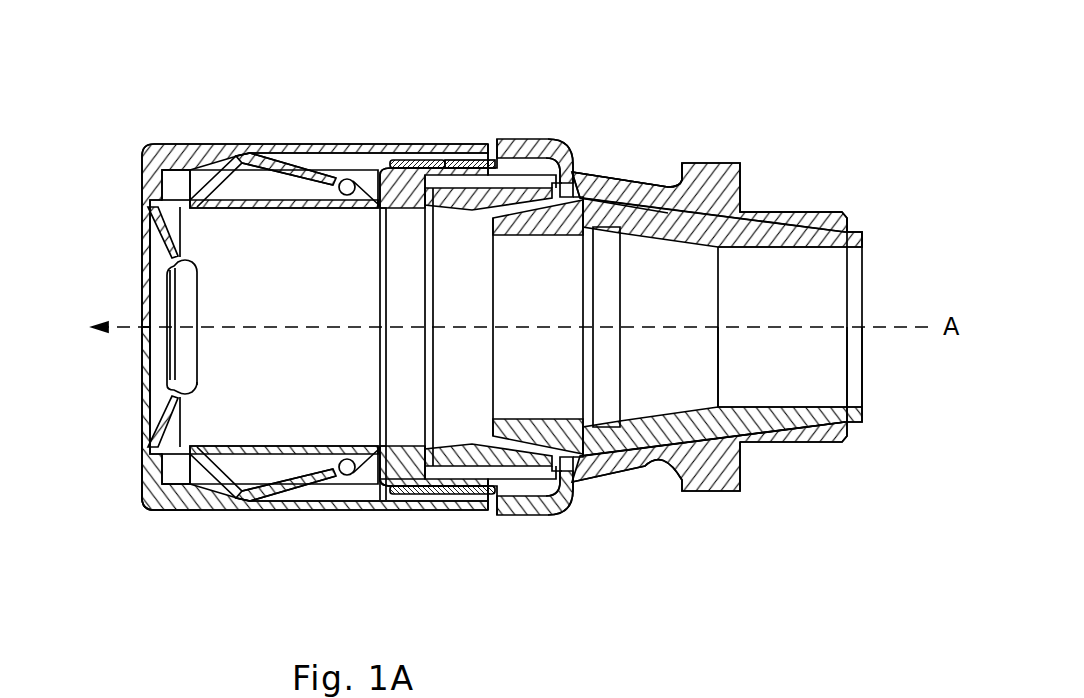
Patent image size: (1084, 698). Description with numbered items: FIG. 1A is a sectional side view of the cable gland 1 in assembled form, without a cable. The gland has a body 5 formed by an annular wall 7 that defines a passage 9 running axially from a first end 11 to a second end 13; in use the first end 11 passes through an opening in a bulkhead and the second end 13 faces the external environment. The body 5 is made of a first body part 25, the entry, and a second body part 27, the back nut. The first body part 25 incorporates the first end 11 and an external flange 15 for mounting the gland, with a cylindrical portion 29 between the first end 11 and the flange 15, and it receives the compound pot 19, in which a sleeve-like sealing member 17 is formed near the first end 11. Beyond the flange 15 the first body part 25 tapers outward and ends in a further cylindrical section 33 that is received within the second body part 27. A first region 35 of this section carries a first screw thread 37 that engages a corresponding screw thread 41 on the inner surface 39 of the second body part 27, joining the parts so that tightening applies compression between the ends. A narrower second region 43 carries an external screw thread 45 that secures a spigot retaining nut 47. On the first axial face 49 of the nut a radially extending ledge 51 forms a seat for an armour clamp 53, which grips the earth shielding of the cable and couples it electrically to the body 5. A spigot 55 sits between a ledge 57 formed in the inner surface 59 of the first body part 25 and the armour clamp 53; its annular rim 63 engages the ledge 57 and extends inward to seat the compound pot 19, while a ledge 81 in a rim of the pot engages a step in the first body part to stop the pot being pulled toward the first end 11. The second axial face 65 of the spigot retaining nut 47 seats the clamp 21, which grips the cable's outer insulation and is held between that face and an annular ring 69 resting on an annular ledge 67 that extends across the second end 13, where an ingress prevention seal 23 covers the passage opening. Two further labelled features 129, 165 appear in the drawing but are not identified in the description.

The cable gland 1 is at (127, 127).
The body 5 is at (508, 128).
The annular wall 7 is at (278, 148).
The passage 9 is at (118, 298).
The first end 11 is at (848, 220).
The second end 13 is at (141, 163).
The external flange 15 is at (716, 168).
The sealing member 17 is at (793, 192).
The compound pot 19 is at (797, 415).
The clamp 21 is at (252, 176).
The ingress prevention seal 23 is at (142, 440).
The first body part 25 is at (650, 465).
The second body part 27 is at (200, 498).
The cylindrical portion 29 is at (830, 432).
The further cylindrical section 33 is at (491, 147).
The first region 35 is at (538, 156).
The first screw thread 37 is at (540, 510).
The inner surface 39 is at (450, 517).
The screw thread 41 is at (513, 510).
The second region 43 is at (458, 163).
The external screw thread 45 is at (418, 473).
The spigot retaining nut 47 is at (355, 473).
The first axial face 49 is at (372, 490).
The radially extending ledge 51 is at (378, 165).
The armour clamp 53 is at (477, 500).
The spigot 55 is at (568, 192).
The ledge 57 is at (585, 470).
The inner surface 59 is at (623, 462).
The annular rim 63 is at (303, 510).
The second axial face 65 is at (392, 163).
The annular ledge 67 is at (140, 508).
The annular ring 69 is at (157, 473).
The ledge 81 is at (656, 196).
The insert block 129 is at (178, 190).
The housing end 165 is at (566, 160).